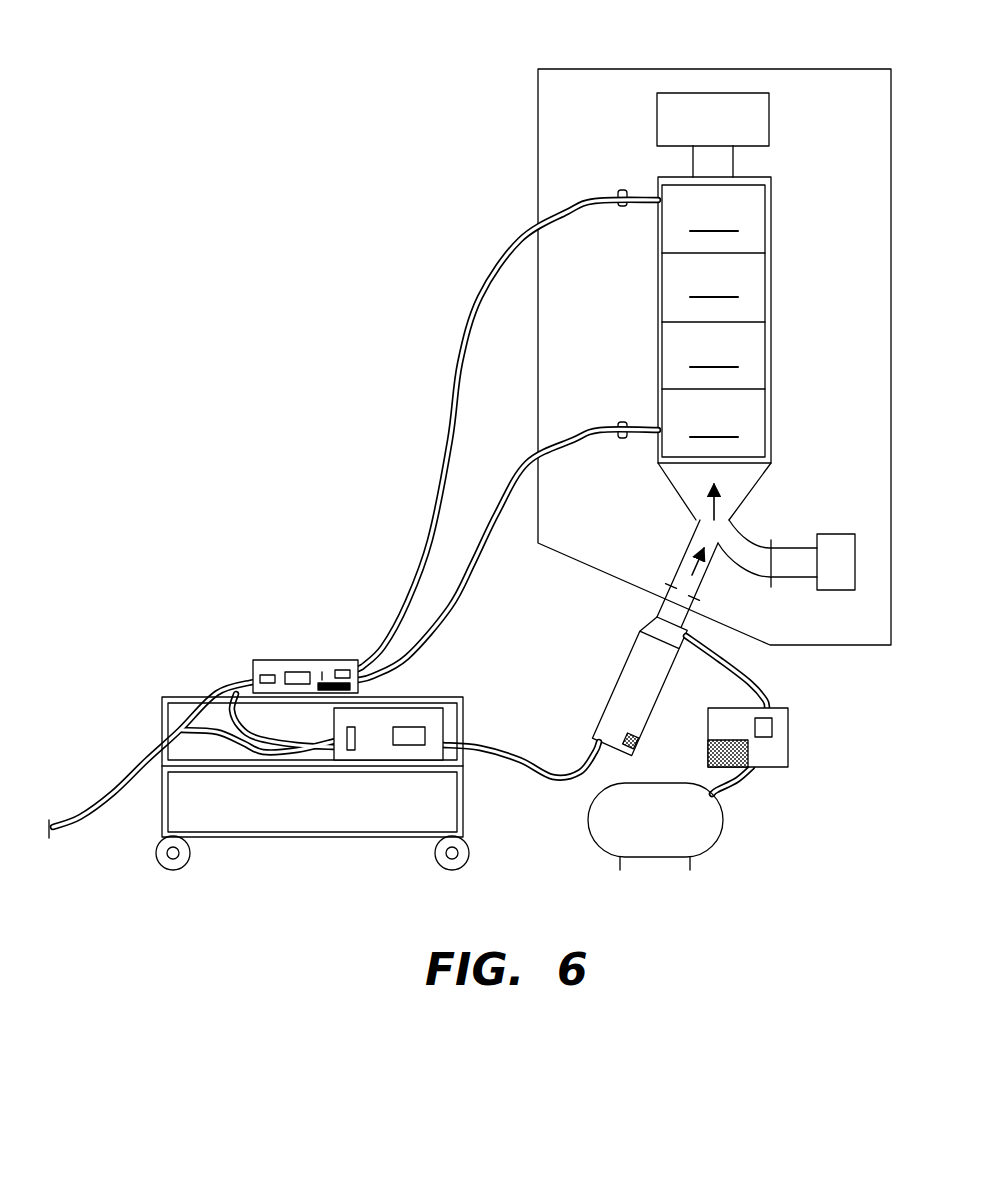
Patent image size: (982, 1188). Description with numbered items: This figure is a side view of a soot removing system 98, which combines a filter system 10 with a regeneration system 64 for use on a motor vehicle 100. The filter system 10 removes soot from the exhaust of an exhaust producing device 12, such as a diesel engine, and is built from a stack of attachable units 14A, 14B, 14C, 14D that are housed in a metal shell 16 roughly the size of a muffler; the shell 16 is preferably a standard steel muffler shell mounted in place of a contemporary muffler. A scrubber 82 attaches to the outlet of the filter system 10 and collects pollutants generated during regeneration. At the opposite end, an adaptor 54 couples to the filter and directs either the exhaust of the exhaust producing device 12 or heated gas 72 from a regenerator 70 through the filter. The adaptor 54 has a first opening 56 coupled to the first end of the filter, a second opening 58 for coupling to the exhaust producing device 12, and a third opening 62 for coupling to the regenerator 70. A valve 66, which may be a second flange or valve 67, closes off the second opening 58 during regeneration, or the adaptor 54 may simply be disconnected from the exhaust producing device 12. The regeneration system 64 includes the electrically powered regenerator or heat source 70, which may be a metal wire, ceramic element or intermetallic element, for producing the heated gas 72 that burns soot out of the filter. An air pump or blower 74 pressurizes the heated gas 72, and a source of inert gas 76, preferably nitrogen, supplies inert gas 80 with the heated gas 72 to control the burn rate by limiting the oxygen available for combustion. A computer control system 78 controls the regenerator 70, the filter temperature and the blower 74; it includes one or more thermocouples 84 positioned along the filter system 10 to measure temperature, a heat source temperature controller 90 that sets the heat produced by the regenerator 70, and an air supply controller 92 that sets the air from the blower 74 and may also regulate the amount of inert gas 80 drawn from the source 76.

The filter system 10 is at (753, 297).
The exhaust producing device 12 is at (838, 540).
The unit 14A is at (713, 229).
The unit 14B is at (713, 296).
The unit 14C is at (713, 365).
The unit 14D is at (713, 425).
The shell 16 is at (771, 390).
The adaptor 54 is at (732, 484).
The first opening 56 is at (672, 477).
The second opening 58 is at (797, 578).
The third opening 62 is at (695, 540).
The regeneration system 64 is at (305, 568).
The valve 66 is at (671, 586).
The second flange or valve 67 is at (773, 545).
The regenerator or heat source 70 is at (633, 673).
The heated gas 72 is at (805, 489).
The air pump or blower 74 is at (779, 732).
The source of inert gas 76 is at (639, 840).
The computer control system 78 is at (305, 660).
The inert gas 80 is at (745, 483).
The scrubber 82 is at (665, 114).
The thermocouple 84 is at (622, 190).
The heat source temperature controller 90 is at (420, 708).
The air supply controller 92 is at (773, 727).
The soot removing system 98 is at (387, 417).
The motor vehicle 100 is at (563, 68).